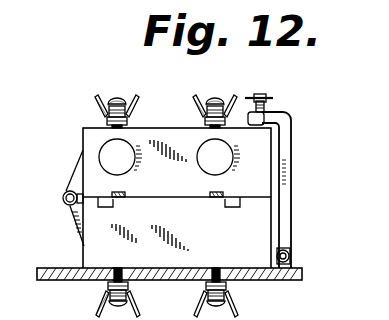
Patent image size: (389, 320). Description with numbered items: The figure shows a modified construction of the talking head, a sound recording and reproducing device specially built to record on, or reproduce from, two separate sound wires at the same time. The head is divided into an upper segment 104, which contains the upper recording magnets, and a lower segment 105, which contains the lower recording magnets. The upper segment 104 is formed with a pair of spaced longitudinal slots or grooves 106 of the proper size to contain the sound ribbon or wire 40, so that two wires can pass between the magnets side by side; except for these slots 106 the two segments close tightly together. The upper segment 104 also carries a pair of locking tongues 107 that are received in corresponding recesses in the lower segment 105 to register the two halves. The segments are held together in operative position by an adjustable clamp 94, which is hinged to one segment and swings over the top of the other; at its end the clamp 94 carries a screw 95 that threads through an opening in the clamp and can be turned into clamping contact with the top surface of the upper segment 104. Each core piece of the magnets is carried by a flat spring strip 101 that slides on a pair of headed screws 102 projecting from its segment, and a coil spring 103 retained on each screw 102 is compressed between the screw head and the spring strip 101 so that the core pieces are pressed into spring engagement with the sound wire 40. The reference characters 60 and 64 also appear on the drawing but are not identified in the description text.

The sound ribbon or wire 40 is at (126, 190).
The base plate 60 is at (169, 294).
The bolt 64 is at (129, 294).
The adjustable clamp 94 is at (285, 203).
The screw 95 is at (262, 96).
The flat spring strip 101 is at (110, 118).
The screw 102 is at (115, 98).
The coil spring 103 is at (123, 98).
The upper segment 104 is at (158, 127).
The lower segment 105 is at (95, 248).
The longitudinal slots or grooves 106 is at (128, 165).
The locking tongues 107 is at (107, 197).